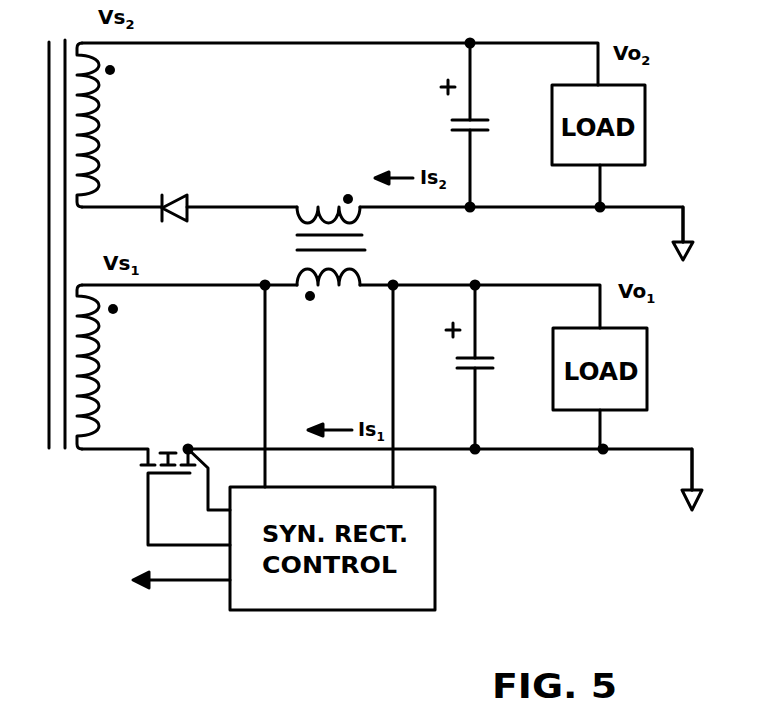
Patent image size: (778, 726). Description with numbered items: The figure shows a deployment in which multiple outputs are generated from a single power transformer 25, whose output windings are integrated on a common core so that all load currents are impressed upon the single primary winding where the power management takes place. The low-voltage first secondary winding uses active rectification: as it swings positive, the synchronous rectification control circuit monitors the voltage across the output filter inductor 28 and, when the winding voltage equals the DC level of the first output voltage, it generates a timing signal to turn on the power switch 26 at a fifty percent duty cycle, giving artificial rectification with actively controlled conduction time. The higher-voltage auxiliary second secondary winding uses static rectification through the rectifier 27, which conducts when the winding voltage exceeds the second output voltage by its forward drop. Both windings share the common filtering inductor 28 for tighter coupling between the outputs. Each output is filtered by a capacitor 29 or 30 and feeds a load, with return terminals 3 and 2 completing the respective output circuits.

The output ground terminal 2 is at (702, 489).
The output ground terminal 3 is at (695, 246).
The power transformer 25 is at (83, 267).
The power switch 26 is at (156, 495).
The rectifier 27 is at (176, 227).
The output filter inductor 28 is at (331, 261).
The output capacitor 29 is at (478, 125).
The output capacitor 30 is at (483, 367).